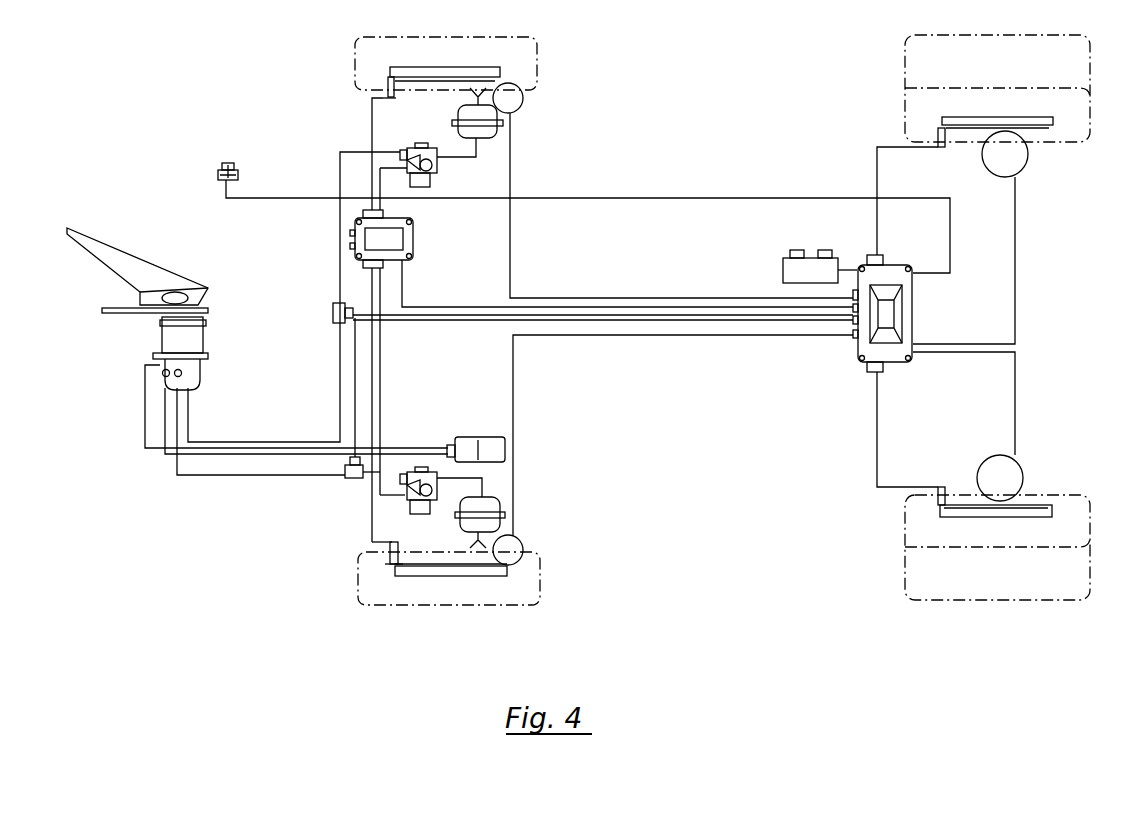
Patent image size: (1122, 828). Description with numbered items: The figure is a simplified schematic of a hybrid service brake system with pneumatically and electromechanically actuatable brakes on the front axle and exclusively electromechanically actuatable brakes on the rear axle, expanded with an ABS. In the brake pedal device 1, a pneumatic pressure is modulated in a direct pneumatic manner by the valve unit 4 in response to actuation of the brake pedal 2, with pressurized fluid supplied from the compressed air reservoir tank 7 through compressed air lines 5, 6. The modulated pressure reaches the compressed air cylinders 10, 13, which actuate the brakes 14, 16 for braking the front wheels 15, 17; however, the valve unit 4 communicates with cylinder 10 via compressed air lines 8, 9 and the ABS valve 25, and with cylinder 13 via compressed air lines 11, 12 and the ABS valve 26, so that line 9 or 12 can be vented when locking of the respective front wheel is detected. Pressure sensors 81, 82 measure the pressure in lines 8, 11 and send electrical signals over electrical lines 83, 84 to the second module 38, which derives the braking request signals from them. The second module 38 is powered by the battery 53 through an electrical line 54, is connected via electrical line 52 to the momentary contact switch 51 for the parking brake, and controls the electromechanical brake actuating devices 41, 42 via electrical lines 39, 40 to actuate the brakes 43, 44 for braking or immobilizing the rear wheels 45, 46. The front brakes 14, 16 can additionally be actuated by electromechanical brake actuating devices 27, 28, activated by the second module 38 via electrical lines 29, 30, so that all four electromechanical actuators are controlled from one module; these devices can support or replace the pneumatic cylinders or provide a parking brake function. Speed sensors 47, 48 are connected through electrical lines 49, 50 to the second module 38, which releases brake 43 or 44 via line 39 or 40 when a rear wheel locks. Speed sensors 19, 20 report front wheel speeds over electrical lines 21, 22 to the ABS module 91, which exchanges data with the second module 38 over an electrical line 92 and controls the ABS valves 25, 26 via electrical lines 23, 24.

The brake pedal device 1 is at (160, 332).
The brake pedal 2 is at (85, 250).
The valve unit 4 is at (198, 382).
The compressed air line 5 is at (404, 447).
The compressed air line 6 is at (396, 480).
The compressed air reservoir tank 7 is at (487, 437).
The compressed air line 8 is at (340, 372).
The compressed air line 9 is at (476, 157).
The compressed air cylinder 10 is at (497, 132).
The compressed air line 11 is at (248, 475).
The compressed air line 12 is at (488, 476).
The compressed air cylinder 13 is at (500, 508).
The brake 14 is at (445, 79).
The front wheel 15 is at (525, 57).
The brake 16 is at (430, 576).
The front wheel 17 is at (525, 601).
The speed sensor 19 is at (395, 95).
The speed sensor 20 is at (390, 560).
The electrical line 21 is at (372, 118).
The electrical line 22 is at (372, 536).
The electrical line 23 is at (404, 165).
The electrical line 24 is at (382, 372).
The ABS valve 25 is at (437, 170).
The ABS valve 26 is at (430, 514).
The electromechanical brake actuating device 27 is at (523, 103).
The electromechanical brake actuating device 28 is at (523, 546).
The electrical line 29 is at (510, 250).
The electrical line 30 is at (513, 410).
The second module 38 is at (912, 295).
The electrical line 39 is at (1015, 270).
The electrical line 40 is at (1015, 402).
The electromechanical brake actuating device 41 is at (1027, 160).
The electromechanical brake actuating device 42 is at (1022, 470).
The brake 43 is at (1052, 126).
The brake 44 is at (1050, 505).
The rear wheel 45 is at (1062, 62).
The rear wheel 46 is at (1062, 584).
The speed sensor 47 is at (945, 144).
The speed sensor 48 is at (945, 490).
The electrical line 49 is at (877, 186).
The electrical line 50 is at (877, 459).
The momentary contact switch 51 is at (236, 168).
The electrical line 52 is at (690, 198).
The battery 53 is at (812, 250).
The electrical line 54 is at (844, 268).
The pressure sensor 81 is at (333, 305).
The pressure sensor 82 is at (345, 484).
The electrical line 83 is at (355, 312).
The electrical line 84 is at (462, 321).
The ABS module 91 is at (413, 240).
The electrical line 92 is at (450, 307).